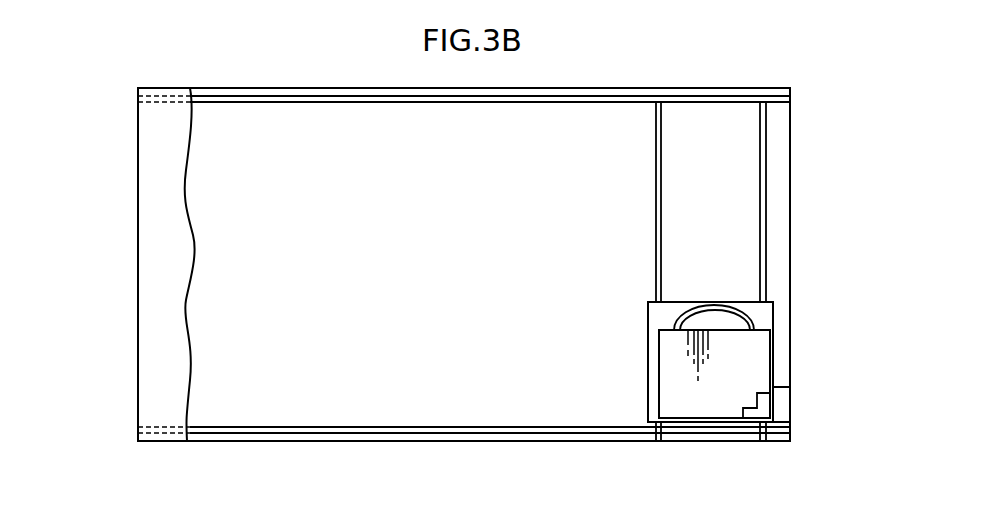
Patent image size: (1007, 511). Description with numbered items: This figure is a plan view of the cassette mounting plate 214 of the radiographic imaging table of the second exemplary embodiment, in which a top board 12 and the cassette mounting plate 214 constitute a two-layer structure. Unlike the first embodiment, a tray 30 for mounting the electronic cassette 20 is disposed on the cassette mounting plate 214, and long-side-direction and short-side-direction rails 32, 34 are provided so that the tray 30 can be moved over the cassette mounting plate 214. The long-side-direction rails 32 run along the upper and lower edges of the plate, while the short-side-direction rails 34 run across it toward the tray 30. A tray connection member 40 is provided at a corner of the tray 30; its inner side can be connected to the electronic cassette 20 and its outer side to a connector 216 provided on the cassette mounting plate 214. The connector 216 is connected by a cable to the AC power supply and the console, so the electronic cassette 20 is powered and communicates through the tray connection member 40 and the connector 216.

The top board 12 is at (152, 201).
The cassette mounting plate 214 is at (214, 260).
The long-side-direction rail 32 is at (240, 102).
The short-side-direction rail 34 is at (760, 137).
The tray 30 is at (657, 314).
The electronic cassette 20 is at (672, 372).
The tray connection member 40 is at (755, 410).
The connector 216 is at (783, 400).